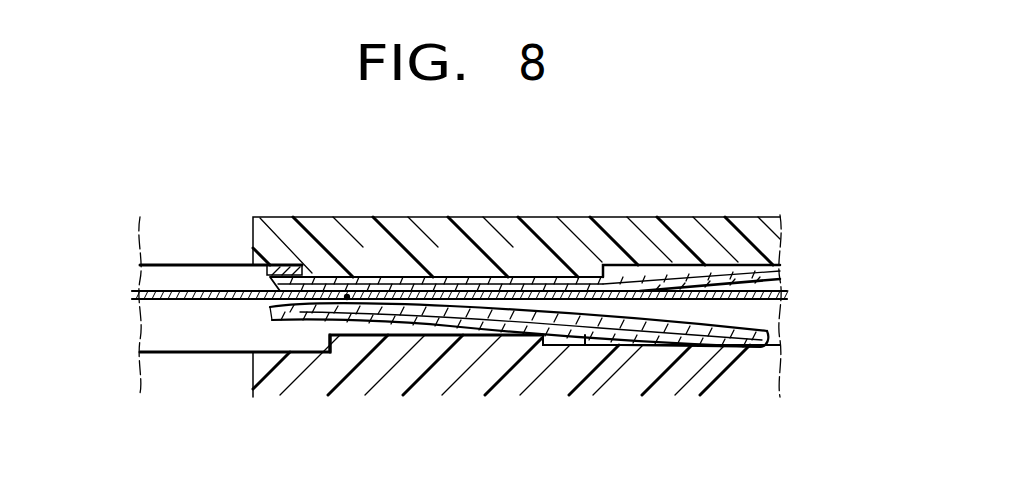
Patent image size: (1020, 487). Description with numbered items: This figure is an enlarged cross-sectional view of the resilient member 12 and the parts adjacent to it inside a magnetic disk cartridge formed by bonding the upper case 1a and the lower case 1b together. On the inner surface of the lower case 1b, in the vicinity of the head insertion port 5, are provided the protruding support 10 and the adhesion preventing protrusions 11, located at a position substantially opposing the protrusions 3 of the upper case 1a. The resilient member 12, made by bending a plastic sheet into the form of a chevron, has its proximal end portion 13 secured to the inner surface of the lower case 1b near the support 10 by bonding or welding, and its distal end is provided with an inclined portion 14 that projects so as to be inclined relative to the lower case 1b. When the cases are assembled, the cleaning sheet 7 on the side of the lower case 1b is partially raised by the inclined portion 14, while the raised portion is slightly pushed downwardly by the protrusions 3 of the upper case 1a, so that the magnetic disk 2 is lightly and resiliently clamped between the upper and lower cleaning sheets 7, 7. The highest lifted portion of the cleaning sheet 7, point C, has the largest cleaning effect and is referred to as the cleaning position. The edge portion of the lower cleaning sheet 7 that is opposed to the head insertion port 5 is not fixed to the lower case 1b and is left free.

The upper case 1a is at (538, 240).
The lower case 1b is at (617, 380).
The magnetic disk 2 is at (714, 290).
The protrusions 3 is at (440, 272).
The head insertion port 5 is at (190, 250).
The cleaning sheet 7 is at (745, 265).
The protruding support 10 is at (575, 346).
The adhesion preventing protrusions 11 is at (343, 337).
The resilient member 12 is at (495, 326).
The proximal end portion 13 is at (680, 346).
The inclined portion 14 is at (415, 318).
The point C is at (347, 294).